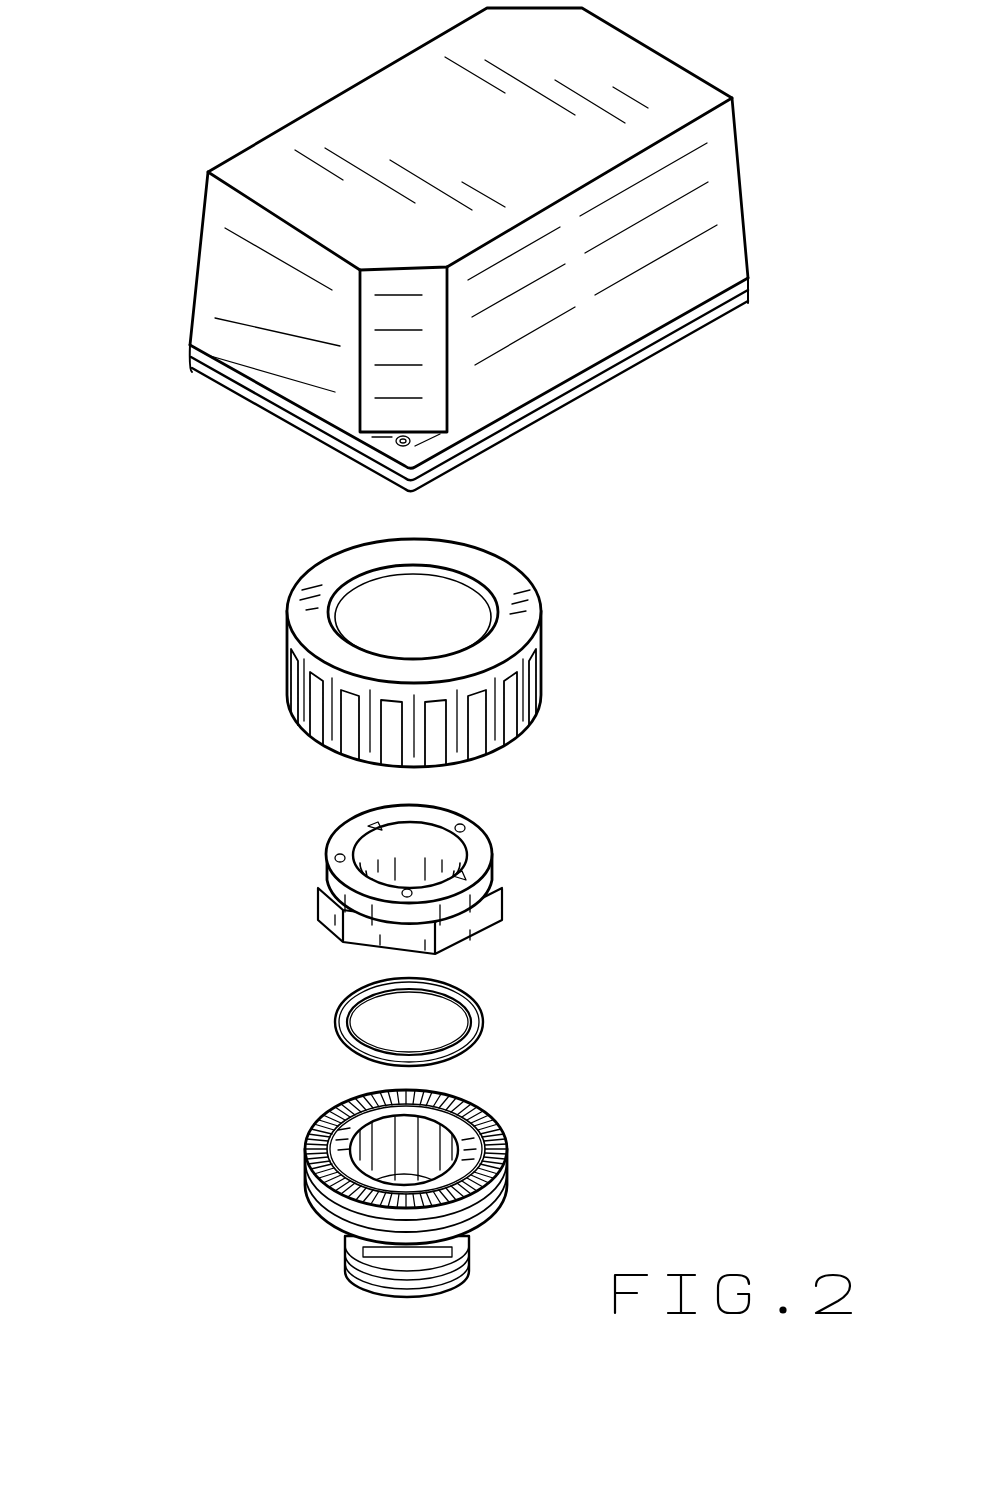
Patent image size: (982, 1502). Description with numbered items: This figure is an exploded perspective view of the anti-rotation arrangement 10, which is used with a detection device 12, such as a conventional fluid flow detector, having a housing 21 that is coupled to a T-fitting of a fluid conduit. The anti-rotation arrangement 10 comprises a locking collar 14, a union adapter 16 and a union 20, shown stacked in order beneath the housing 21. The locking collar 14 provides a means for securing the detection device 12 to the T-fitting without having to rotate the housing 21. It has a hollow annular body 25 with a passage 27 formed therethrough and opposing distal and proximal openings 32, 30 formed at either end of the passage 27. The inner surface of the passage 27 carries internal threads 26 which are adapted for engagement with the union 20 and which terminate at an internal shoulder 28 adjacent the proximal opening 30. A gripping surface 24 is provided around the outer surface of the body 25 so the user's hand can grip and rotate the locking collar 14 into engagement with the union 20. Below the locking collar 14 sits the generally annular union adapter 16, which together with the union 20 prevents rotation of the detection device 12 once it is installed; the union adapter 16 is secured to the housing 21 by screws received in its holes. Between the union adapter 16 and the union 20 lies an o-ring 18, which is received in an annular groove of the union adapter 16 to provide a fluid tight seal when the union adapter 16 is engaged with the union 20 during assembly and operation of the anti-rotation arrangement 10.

The anti-rotation arrangement 10 is at (263, 1297).
The detection device 12 is at (402, 249).
The housing 21 is at (263, 139).
The locking collar 14 is at (381, 635).
The gripping surface 24 is at (381, 635).
The hollow annular body 25 is at (296, 592).
The internal threads 26 is at (377, 627).
The passage 27 is at (383, 590).
The internal shoulder 28 is at (413, 585).
The proximal opening 30 is at (353, 638).
The distal opening 32 is at (391, 722).
The union adapter 16 is at (318, 850).
The o-ring 18 is at (330, 1020).
The union 20 is at (520, 1183).